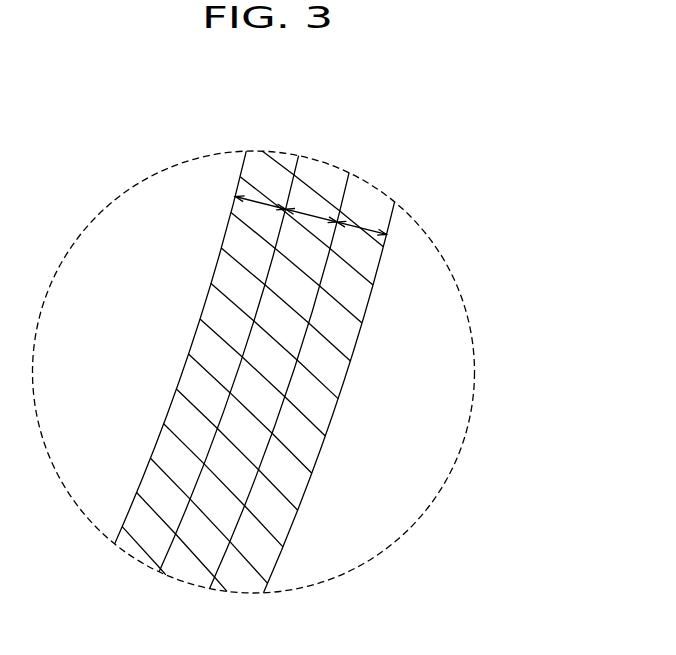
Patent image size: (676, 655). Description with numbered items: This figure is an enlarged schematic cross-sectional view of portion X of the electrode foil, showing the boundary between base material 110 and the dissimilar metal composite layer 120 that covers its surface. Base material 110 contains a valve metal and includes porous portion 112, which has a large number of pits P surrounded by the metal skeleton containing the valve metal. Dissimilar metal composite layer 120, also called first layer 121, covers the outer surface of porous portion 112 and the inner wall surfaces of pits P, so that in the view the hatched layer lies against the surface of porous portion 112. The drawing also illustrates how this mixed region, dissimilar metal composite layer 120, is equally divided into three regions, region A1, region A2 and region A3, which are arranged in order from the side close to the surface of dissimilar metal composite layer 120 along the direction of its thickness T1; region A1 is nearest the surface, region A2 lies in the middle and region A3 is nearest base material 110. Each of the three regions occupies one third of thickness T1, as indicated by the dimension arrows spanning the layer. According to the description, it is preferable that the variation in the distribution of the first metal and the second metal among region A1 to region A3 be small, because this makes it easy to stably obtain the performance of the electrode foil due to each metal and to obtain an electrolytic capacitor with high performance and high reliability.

The base material 110 is at (174, 330).
The porous portion 112 is at (148, 268).
The dissimilar metal composite layer 120 is at (395, 372).
The first layer 121 is at (395, 372).
The region A1 is at (368, 284).
The region A2 is at (283, 332).
The region A3 is at (207, 387).
The thickness T1 is at (257, 204).
The portion X is at (430, 233).
The pits P is at (388, 480).